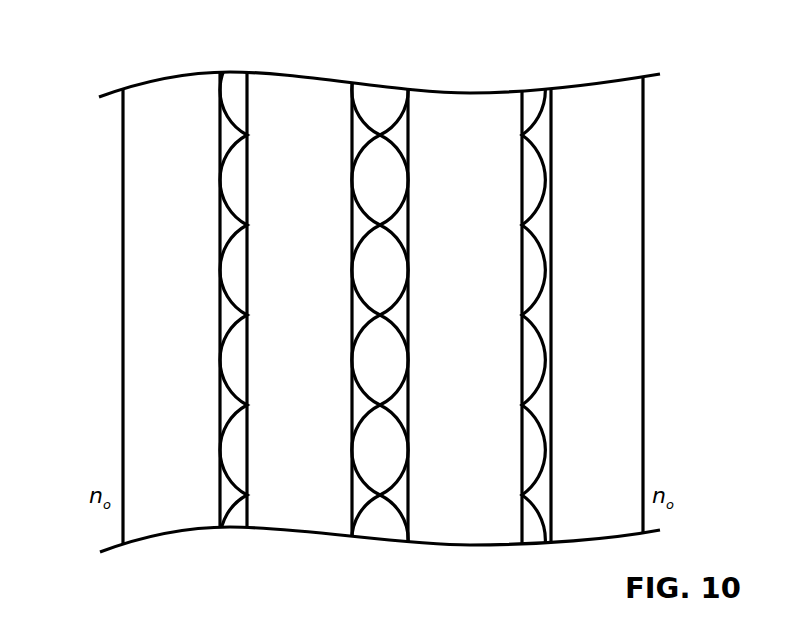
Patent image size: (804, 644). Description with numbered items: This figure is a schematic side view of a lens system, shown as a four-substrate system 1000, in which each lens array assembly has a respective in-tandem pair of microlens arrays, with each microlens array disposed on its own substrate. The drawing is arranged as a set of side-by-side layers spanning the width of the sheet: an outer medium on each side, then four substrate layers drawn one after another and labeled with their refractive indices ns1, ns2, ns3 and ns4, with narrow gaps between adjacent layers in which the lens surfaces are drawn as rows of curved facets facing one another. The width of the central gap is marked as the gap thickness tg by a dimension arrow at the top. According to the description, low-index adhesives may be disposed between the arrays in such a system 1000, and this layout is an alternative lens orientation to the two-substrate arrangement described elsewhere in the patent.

The four-substrate system 1000 is at (399, 305).
The first layer refractive index ns1 is at (171, 310).
The second layer refractive index ns2 is at (299, 310).
The third layer refractive index ns3 is at (465, 310).
The fourth layer refractive index ns4 is at (597, 310).
The gap thickness tg is at (323, 58).